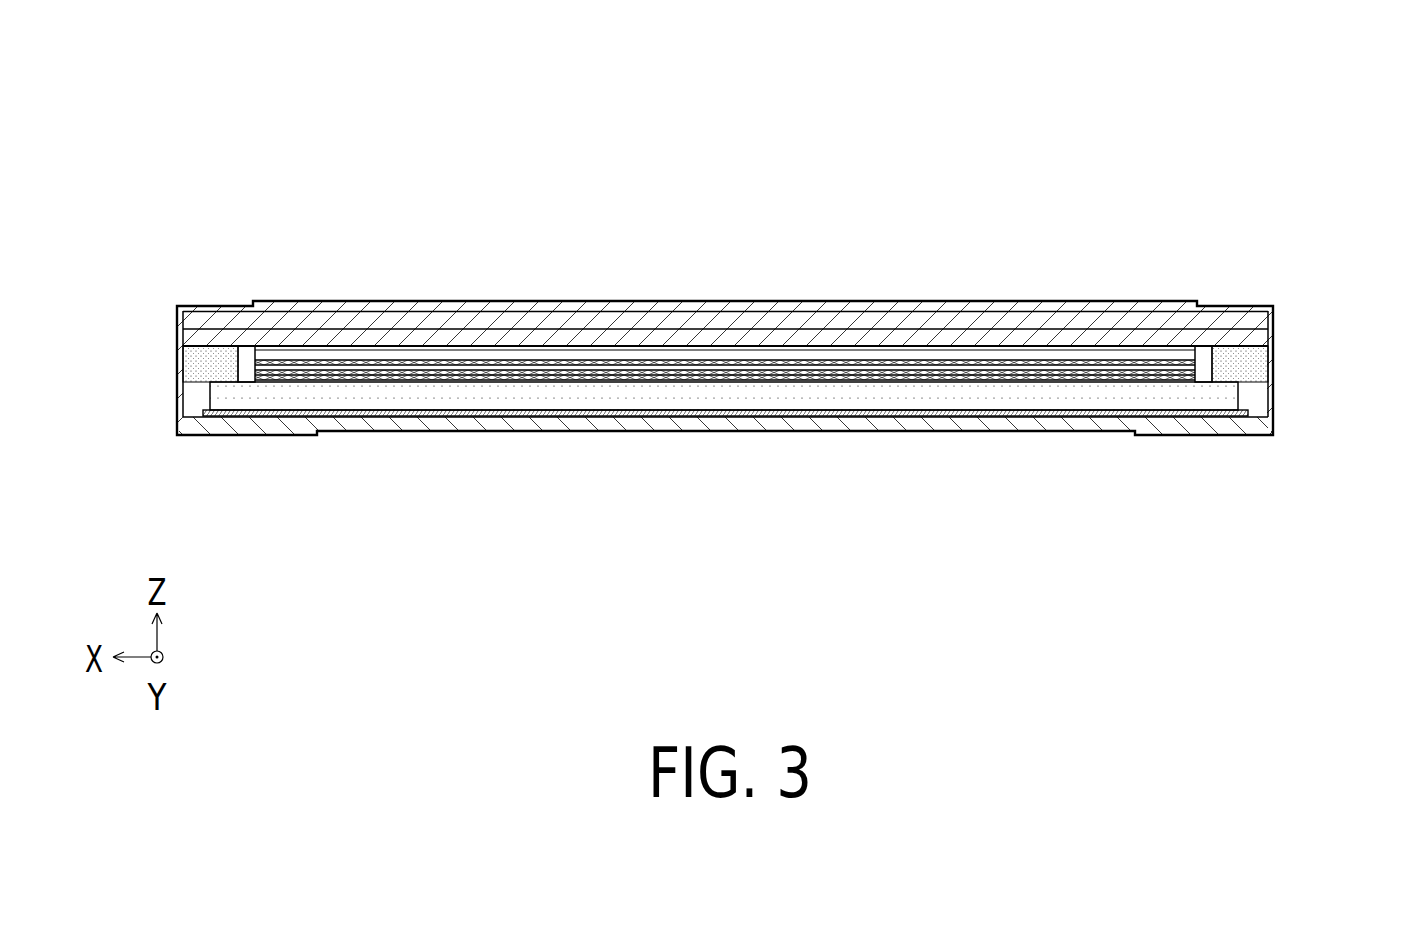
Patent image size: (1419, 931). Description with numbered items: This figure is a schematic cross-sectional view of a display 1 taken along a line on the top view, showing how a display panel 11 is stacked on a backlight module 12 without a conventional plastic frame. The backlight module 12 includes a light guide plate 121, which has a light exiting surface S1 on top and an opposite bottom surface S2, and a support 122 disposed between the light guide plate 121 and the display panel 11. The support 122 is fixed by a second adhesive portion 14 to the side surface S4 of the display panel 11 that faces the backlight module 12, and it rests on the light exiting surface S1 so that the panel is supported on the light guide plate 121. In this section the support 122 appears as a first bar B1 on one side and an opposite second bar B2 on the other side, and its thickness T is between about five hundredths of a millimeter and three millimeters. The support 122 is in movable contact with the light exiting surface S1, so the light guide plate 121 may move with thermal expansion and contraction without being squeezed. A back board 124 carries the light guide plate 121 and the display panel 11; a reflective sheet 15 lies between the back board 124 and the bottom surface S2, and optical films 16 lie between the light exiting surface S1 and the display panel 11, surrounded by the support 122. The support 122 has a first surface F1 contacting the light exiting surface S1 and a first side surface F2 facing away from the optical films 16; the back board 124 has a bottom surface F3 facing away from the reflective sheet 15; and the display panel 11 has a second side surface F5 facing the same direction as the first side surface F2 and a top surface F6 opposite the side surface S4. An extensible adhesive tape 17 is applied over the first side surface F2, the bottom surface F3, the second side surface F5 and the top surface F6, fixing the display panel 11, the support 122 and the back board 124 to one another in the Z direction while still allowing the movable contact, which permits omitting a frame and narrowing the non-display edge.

The display 1 is at (125, 101).
The display panel 11 is at (1273, 301).
The backlight module 12 is at (1273, 346).
The second adhesive portion 14 is at (239, 348).
The reflective sheet 15 is at (700, 397).
The optical film 16 is at (628, 413).
The adhesive tape 17 is at (1235, 360).
The light guide plate 121 is at (820, 393).
The support 122 is at (1247, 365).
The back board 124 is at (420, 425).
The thickness T is at (1273, 382).
The light exiting surface S1 is at (520, 381).
The bottom surface S2 is at (553, 416).
The side surface S4 is at (1056, 341).
The first surface F1 is at (240, 386).
The first side surface F2 is at (191, 373).
The bottom surface F3 is at (1029, 439).
The second side surface F5 is at (192, 327).
The top surface F6 is at (980, 294).
The first bar B1 is at (330, 514).
The second bar B2 is at (1215, 514).